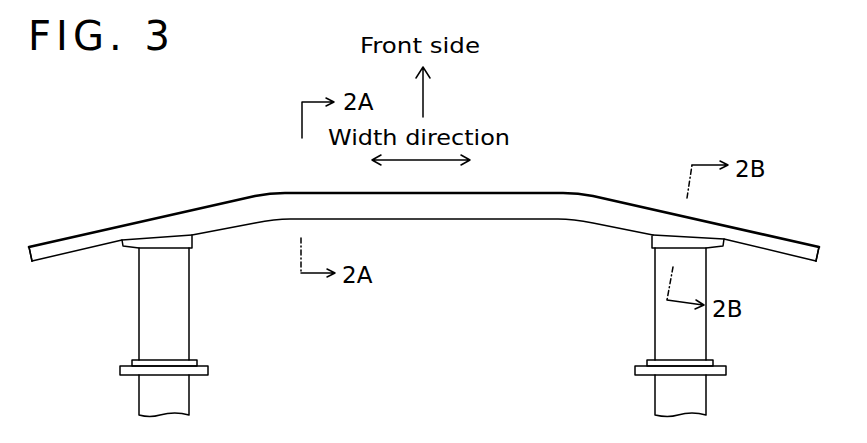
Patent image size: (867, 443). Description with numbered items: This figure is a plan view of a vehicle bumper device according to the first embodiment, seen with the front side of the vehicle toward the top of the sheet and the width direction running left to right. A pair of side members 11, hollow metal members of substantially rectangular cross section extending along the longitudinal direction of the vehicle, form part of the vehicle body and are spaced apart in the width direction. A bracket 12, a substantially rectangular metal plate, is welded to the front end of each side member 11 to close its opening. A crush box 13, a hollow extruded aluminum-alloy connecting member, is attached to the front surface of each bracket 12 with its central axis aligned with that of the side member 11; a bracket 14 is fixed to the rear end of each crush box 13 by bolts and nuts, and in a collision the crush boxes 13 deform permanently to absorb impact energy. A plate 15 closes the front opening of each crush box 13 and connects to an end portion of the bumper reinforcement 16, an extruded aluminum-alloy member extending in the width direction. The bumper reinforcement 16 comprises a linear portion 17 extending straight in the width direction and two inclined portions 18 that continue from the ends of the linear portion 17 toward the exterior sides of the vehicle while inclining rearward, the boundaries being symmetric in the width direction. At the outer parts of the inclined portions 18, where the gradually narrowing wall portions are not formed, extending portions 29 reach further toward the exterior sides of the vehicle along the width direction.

The side member 11 is at (142, 398).
The bracket 12 is at (120, 370).
The crush box 13 is at (187, 303).
The bracket 14 is at (197, 362).
The plate 15 is at (193, 238).
The bumper reinforcement 16 is at (543, 197).
The linear portion 17 is at (352, 192).
The inclined portion 18 is at (83, 233).
The extending portion 29 is at (50, 254).